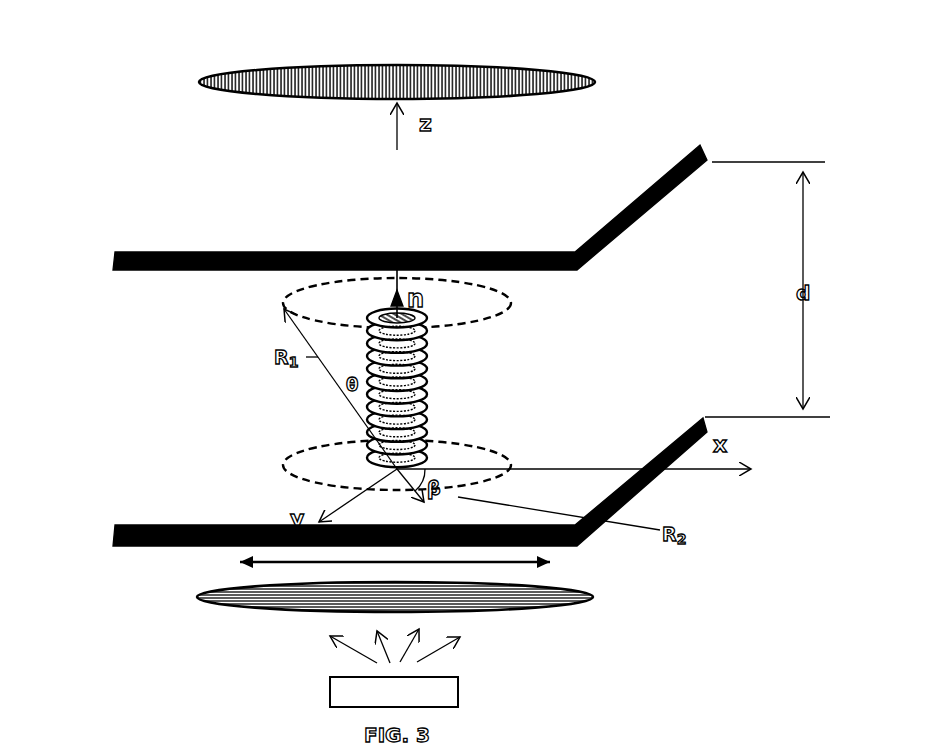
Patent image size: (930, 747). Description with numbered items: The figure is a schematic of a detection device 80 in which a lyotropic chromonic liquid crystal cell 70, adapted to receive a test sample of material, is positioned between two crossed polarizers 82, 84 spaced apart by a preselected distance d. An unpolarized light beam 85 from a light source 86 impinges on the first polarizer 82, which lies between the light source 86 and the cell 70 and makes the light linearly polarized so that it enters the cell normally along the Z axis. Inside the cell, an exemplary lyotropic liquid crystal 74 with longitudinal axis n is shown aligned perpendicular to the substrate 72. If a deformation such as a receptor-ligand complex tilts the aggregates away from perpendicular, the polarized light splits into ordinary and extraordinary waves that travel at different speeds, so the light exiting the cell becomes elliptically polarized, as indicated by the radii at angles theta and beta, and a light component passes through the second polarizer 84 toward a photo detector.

The cell 70 is at (386, 334).
The substrate 72 is at (704, 146).
The lyotropic liquid crystal 74 is at (428, 355).
The detection device 80 is at (115, 78).
The polarizer 82 is at (582, 593).
The second polarizer 84 is at (570, 80).
The unpolarized light beam 85 is at (466, 638).
The light source 86 is at (458, 692).